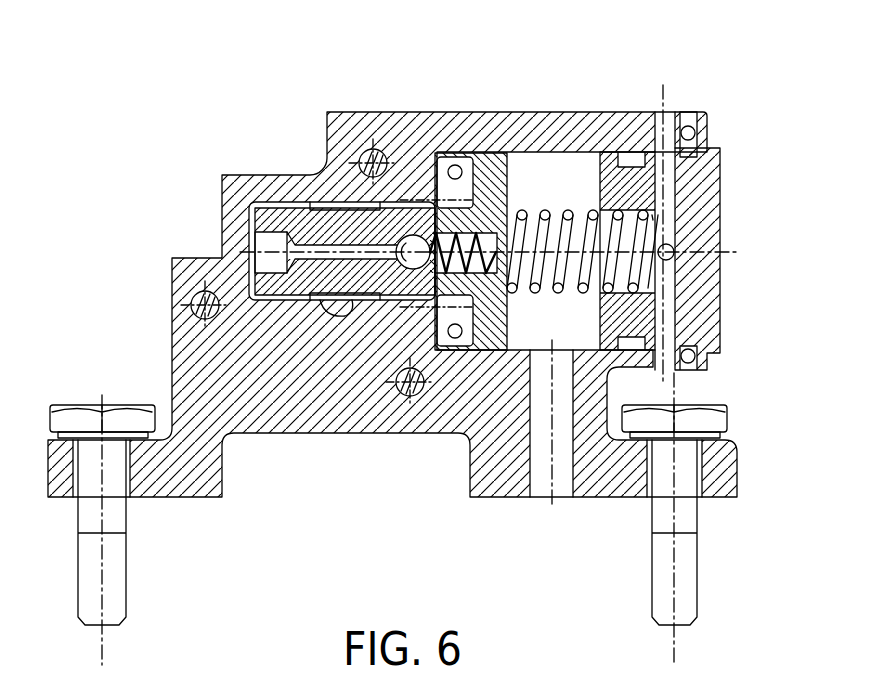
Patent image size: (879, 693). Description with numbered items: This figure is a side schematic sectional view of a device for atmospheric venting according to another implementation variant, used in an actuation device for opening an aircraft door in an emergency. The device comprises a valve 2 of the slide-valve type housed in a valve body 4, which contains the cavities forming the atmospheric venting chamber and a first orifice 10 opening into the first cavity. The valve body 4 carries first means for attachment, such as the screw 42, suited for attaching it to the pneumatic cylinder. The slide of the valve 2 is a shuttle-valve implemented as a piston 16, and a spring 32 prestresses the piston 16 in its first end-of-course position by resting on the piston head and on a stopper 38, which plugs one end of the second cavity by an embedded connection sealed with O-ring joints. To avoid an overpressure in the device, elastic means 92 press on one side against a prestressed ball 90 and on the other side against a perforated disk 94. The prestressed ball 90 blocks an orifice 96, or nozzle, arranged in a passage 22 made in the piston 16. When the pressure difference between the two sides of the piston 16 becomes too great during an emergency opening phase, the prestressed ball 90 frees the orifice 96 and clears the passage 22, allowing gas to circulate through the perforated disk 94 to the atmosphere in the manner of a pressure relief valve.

The valve 2 is at (471, 97).
The valve body 4 is at (185, 363).
The first orifice 10 is at (260, 277).
The piston 16 is at (405, 290).
The passage 22 is at (482, 235).
The spring 32 is at (587, 262).
The stopper 38 is at (698, 173).
The screw 42 is at (710, 423).
The prestressed ball 90 is at (432, 216).
The elastic means 92 is at (440, 237).
The perforated disk 94 is at (512, 217).
The orifice 96 is at (380, 255).